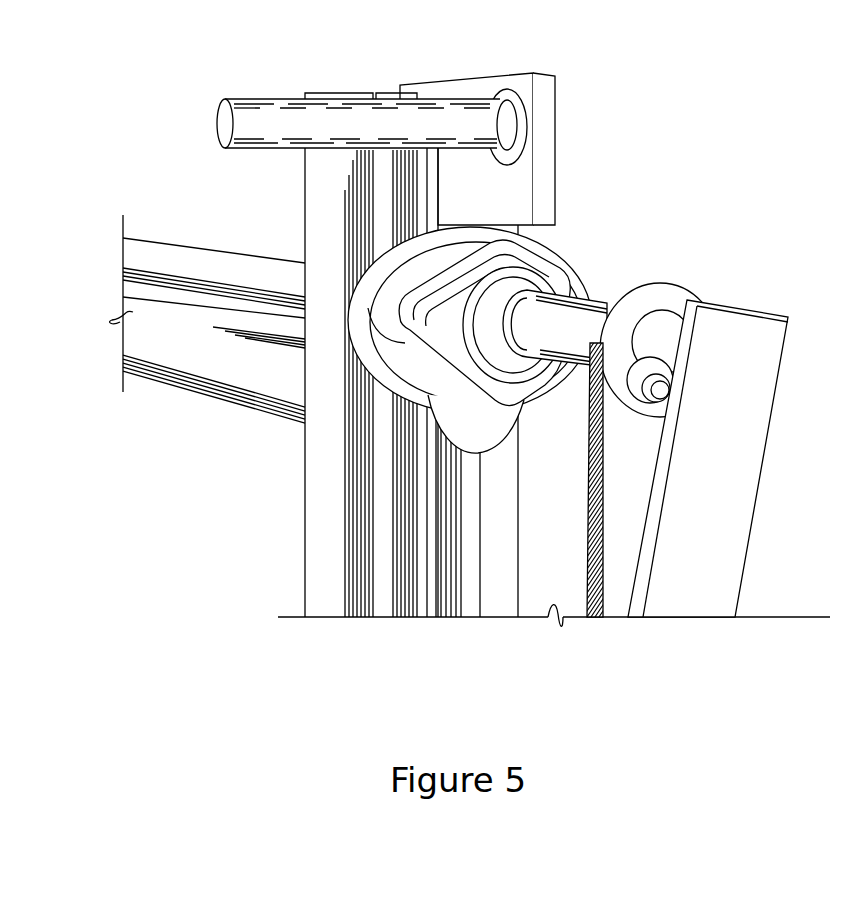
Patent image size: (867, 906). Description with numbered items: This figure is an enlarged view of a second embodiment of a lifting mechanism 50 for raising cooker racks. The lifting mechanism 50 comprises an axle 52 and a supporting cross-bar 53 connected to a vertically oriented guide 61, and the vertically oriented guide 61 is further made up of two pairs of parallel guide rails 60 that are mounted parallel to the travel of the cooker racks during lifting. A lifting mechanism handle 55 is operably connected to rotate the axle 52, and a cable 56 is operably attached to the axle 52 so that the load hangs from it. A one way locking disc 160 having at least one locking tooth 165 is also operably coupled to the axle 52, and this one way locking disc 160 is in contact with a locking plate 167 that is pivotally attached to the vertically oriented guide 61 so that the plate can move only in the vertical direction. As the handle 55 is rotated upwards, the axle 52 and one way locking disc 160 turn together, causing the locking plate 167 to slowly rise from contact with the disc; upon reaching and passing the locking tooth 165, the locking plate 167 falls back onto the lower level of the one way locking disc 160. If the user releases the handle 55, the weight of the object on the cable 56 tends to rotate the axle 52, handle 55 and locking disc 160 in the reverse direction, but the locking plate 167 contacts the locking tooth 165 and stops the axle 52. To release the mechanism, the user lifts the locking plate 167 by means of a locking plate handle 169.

The lifting mechanism 50 is at (130, 113).
The axle 52 is at (188, 260).
The supporting cross-bar 53 is at (185, 393).
The lifting mechanism handle 55 is at (753, 300).
The cable 56 is at (583, 463).
The parallel guide rails 60 is at (422, 166).
The vertically oriented guide 61 is at (450, 57).
The one way locking disc 160 is at (581, 243).
The locking tooth 165 is at (362, 311).
The locking plate 167 is at (557, 112).
The locking plate handle 169 is at (268, 113).